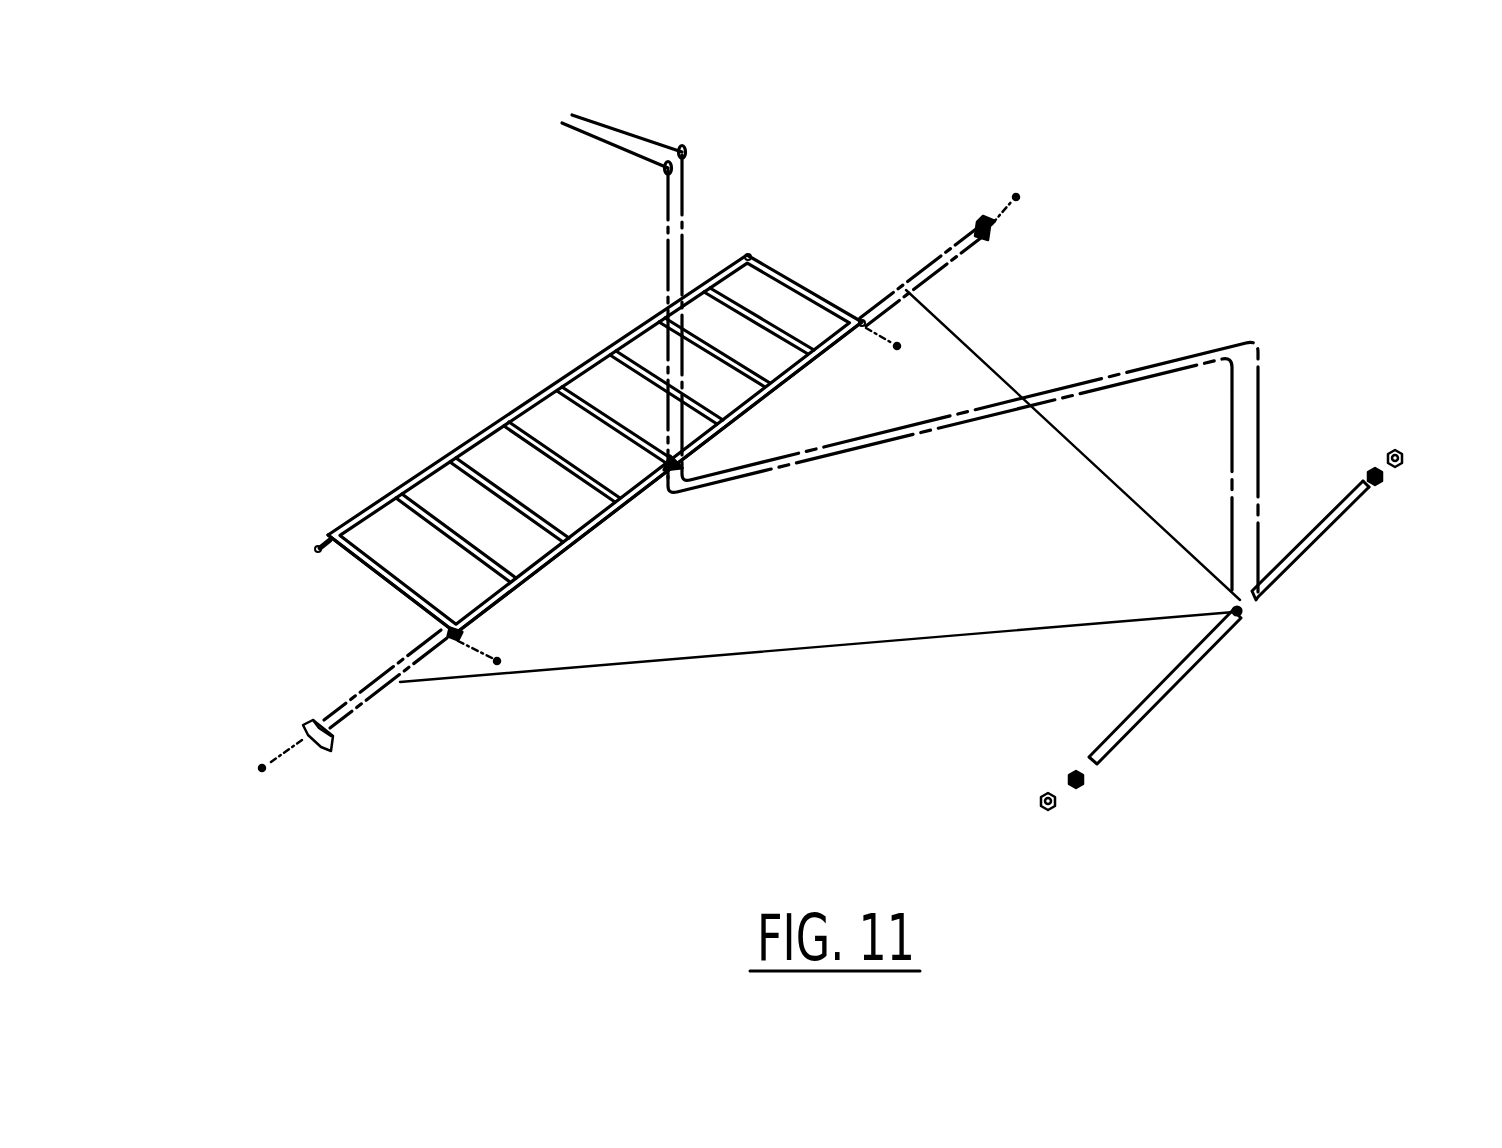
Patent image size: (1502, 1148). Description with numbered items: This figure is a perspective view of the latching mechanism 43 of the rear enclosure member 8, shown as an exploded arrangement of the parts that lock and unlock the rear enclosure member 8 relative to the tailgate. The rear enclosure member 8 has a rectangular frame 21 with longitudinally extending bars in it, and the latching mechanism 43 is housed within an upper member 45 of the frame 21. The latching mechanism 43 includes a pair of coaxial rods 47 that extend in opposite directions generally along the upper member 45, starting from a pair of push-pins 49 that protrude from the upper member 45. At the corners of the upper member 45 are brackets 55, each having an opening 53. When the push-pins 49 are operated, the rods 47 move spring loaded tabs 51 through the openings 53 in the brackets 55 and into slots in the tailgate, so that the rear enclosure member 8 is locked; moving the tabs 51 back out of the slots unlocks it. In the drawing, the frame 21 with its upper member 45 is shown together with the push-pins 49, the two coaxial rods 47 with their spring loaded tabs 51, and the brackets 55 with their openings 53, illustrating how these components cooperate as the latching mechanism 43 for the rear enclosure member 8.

The rear enclosure member 8 is at (796, 282).
The rectangular frame 21 is at (372, 572).
The upper member 45 is at (597, 535).
The push-pins 49 is at (597, 284).
The latching mechanism 43 is at (1268, 625).
The coaxial rods 47 is at (1320, 535).
The spring loaded tabs 51 is at (1403, 450).
The brackets 55 is at (982, 225).
The openings 53 is at (996, 238).